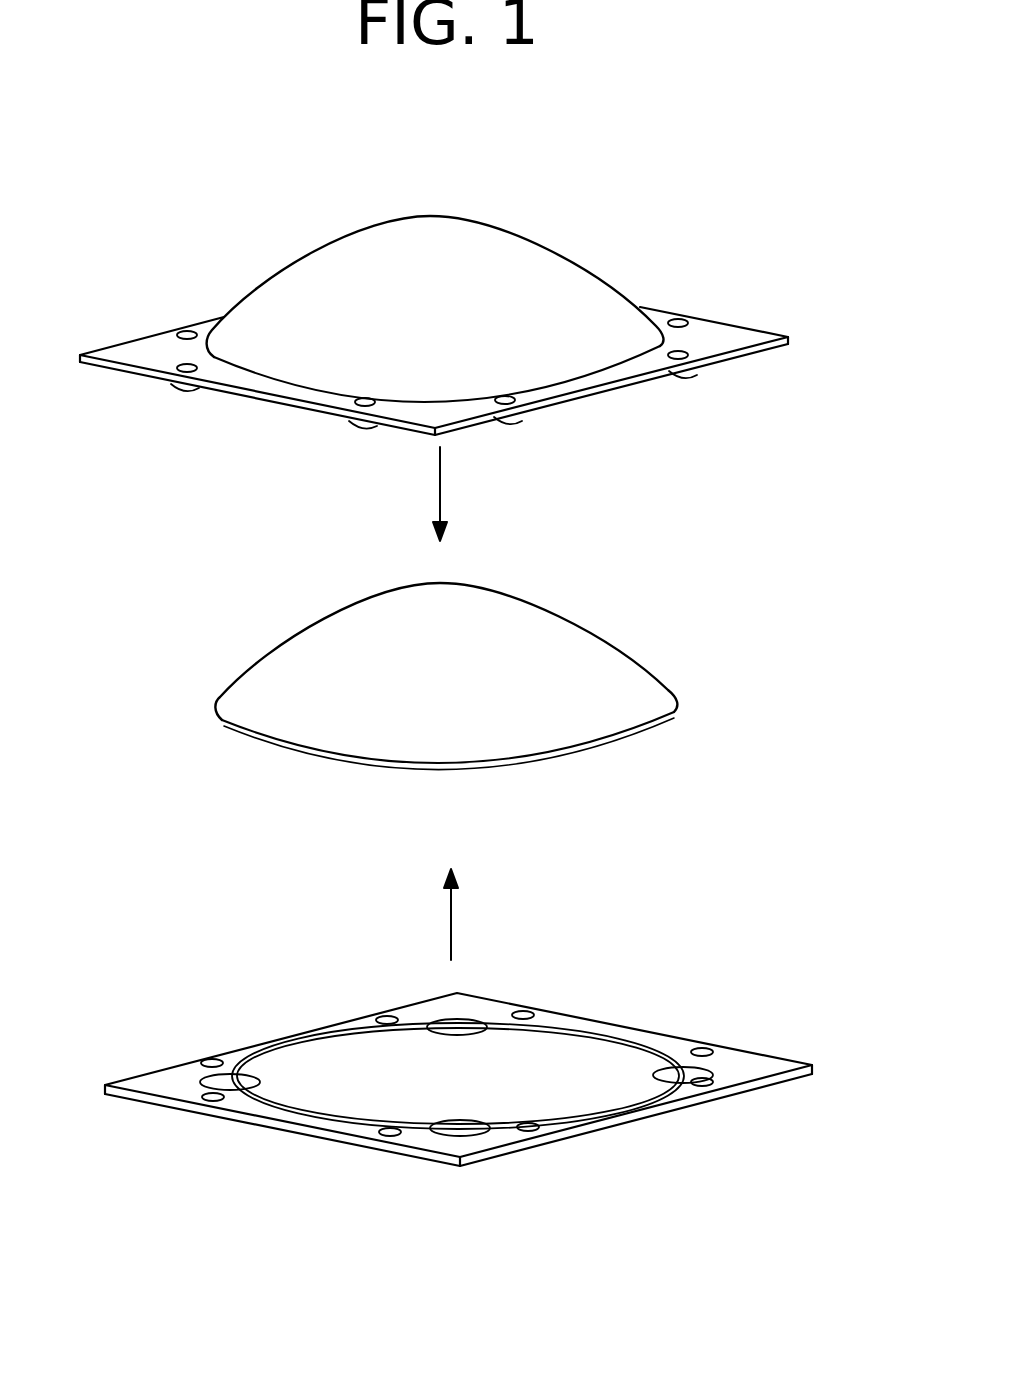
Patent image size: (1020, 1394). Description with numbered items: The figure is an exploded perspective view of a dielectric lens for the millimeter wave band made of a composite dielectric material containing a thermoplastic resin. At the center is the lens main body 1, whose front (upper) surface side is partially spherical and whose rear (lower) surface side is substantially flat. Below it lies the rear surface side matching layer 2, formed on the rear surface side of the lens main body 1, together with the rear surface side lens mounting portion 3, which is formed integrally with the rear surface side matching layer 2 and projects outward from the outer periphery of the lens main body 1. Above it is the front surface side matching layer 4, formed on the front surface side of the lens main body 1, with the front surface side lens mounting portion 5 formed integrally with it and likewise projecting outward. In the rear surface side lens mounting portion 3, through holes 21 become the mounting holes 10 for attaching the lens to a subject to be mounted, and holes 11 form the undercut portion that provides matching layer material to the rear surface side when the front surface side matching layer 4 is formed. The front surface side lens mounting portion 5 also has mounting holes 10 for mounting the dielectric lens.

The lens main body 1 is at (505, 615).
The rear surface side matching layer 2 is at (560, 1092).
The rear surface side lens mounting portion 3 is at (440, 1162).
The front surface side matching layer 4 is at (425, 247).
The front surface side lens mounting portion 5 is at (423, 432).
The mounting holes 10 is at (193, 330).
The holes 11 is at (247, 1087).
The through holes 21 is at (387, 1020).